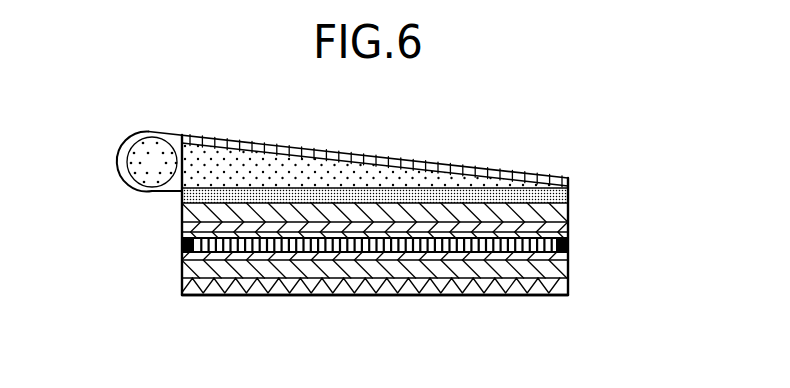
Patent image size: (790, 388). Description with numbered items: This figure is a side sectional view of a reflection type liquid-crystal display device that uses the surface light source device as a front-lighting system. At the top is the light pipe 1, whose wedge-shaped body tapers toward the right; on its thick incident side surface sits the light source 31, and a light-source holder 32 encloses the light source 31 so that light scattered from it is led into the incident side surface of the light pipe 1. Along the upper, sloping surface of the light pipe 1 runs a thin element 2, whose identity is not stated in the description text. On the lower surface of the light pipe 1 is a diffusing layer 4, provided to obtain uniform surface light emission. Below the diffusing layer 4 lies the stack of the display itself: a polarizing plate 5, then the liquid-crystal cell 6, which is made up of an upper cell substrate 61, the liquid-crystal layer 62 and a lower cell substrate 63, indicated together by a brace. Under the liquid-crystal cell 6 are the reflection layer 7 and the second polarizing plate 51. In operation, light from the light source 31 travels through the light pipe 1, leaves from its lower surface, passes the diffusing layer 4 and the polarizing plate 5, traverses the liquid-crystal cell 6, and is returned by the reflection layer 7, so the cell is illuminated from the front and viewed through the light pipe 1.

The light pipe 1 is at (254, 160).
The release sheet 2 is at (341, 156).
The light source 31 is at (151, 152).
The light-source holder 32 is at (122, 166).
The diffusing layer 4 is at (570, 189).
The polarizing plate 5 is at (568, 214).
The liquid-crystal cell 6 is at (421, 250).
The cell substrate 61 is at (560, 233).
The liquid-crystal layer 62 is at (562, 246).
The cell substrate 63 is at (397, 275).
The reflection layer 7 is at (530, 286).
The polarizing plate 51 is at (568, 288).